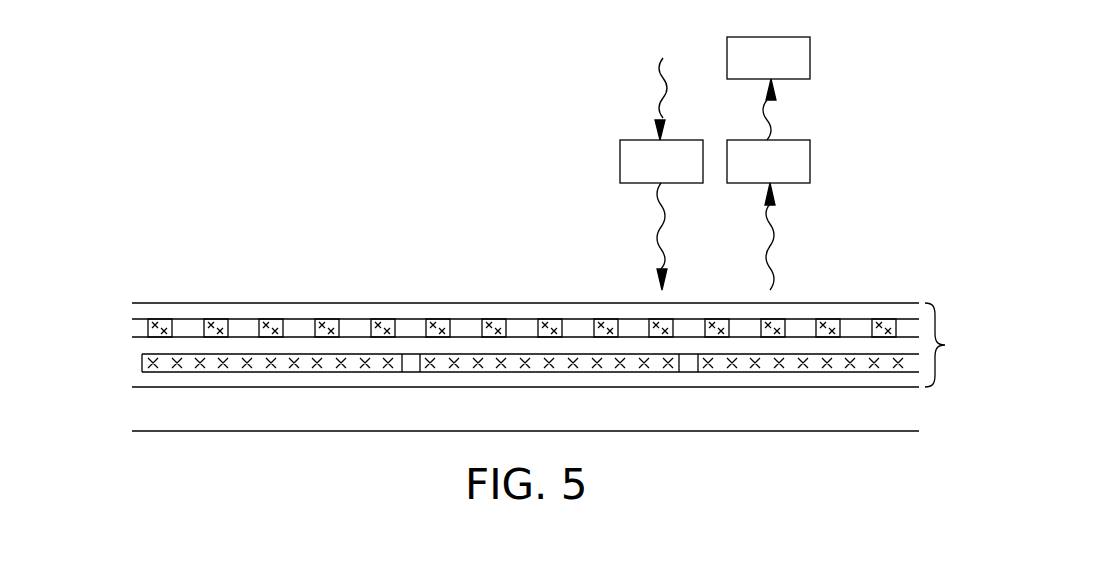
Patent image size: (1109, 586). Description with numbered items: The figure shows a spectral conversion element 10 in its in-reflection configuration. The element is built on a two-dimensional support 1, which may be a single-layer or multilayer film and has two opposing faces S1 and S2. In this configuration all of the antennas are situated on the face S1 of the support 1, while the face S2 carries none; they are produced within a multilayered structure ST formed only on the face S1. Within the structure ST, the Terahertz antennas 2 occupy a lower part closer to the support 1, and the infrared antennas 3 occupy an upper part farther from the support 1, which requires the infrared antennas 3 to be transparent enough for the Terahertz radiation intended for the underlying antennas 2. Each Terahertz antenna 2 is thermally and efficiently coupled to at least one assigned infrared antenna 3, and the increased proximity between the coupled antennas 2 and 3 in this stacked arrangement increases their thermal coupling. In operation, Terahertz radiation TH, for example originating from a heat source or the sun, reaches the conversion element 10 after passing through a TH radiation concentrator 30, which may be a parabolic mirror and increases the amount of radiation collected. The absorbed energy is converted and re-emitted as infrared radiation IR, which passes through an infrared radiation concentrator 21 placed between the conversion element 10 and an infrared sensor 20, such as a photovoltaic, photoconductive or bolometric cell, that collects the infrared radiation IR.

The two-dimensional support 1 is at (885, 409).
The Terahertz antenna 2 is at (303, 363).
The infrared antenna 3 is at (210, 322).
The spectral conversion element 10 is at (350, 226).
The infrared sensor 20 is at (810, 50).
The infrared radiation concentrator 21 is at (810, 153).
The TH radiation concentrator 30 is at (620, 153).
The first face S1 is at (130, 373).
The second face S2 is at (133, 444).
The multilayered structure ST is at (955, 345).
The Terahertz radiation TH is at (655, 90).
The infrared radiation IR is at (775, 120).